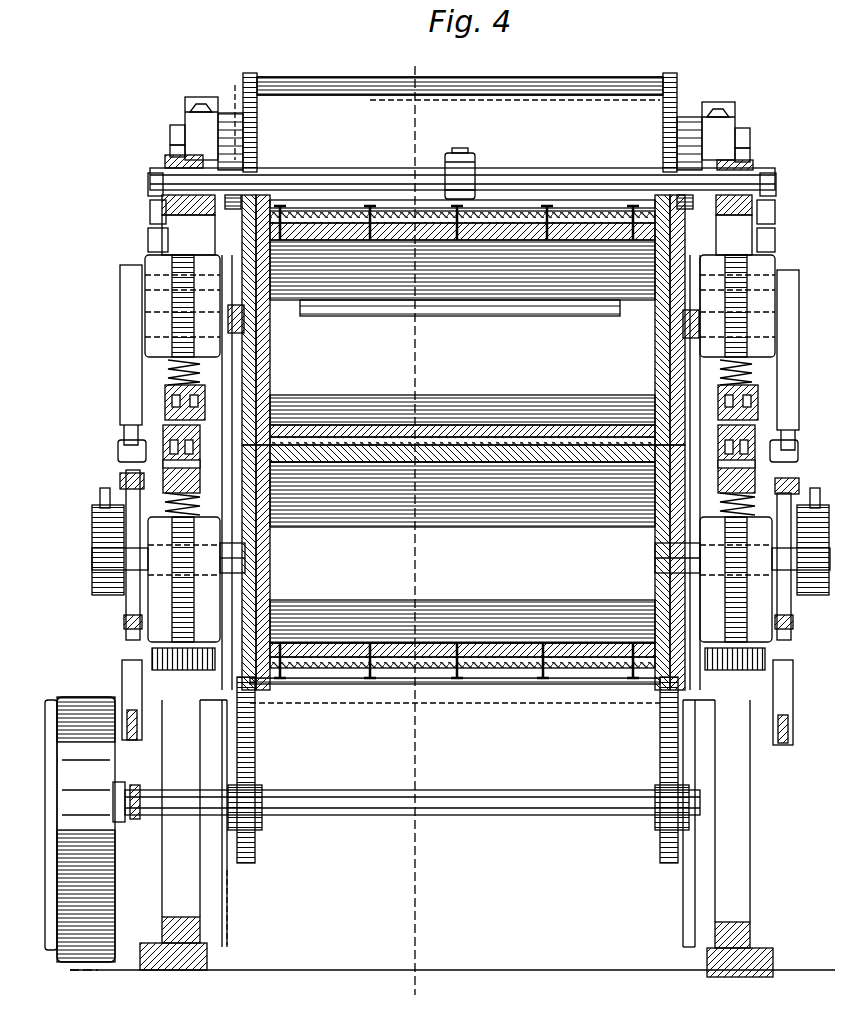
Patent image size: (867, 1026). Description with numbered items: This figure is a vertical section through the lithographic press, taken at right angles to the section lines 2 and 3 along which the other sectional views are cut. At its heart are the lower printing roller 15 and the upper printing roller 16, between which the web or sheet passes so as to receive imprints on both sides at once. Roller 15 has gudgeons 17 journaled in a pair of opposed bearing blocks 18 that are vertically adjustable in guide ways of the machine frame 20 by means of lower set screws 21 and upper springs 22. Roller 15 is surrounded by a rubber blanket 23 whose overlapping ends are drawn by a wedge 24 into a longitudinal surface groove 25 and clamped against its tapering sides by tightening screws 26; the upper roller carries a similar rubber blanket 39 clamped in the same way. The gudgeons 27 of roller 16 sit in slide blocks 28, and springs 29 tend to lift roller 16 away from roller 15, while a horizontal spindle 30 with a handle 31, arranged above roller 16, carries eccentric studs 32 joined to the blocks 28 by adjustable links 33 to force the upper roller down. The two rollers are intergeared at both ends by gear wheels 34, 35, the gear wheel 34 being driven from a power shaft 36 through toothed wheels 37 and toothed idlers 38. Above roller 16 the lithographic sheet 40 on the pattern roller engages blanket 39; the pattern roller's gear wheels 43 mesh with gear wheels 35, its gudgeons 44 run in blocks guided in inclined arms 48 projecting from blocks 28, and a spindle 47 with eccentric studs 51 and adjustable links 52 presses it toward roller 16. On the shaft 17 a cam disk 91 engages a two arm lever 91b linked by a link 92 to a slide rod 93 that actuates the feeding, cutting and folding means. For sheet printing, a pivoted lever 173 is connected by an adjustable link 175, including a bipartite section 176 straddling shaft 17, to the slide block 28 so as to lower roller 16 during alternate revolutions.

The section line 2— 2 is at (232, 504).
The section line 3— 3 is at (415, 531).
The lower printing roller 15 is at (462, 552).
The upper printing roller 16 is at (462, 332).
The gudgeons 17 is at (95, 575).
The bearing blocks 18 is at (460, 579).
The machine frame 20 is at (805, 166).
The lower set screws 21 is at (152, 662).
The upper springs 22 is at (195, 505).
The rubber blanket 23 is at (455, 475).
The wedge 24 is at (583, 204).
The longitudinal surface groove 25 is at (485, 220).
The tightening screws 26 is at (548, 215).
The gudgeons 27 is at (140, 322).
The slide blocks 28 is at (460, 306).
The springs 29 is at (168, 378).
The horizontal spindle 30 is at (340, 168).
The handle 31 is at (466, 155).
The eccentric studs 32 is at (147, 184).
The adjustable links 33 is at (150, 223).
The gear wheels 34 is at (262, 620).
The gear wheels 35 is at (262, 388).
The power shaft 36 is at (553, 800).
The toothed wheels 37 is at (258, 778).
The toothed idlers 38 is at (255, 728).
The rubber blanket 39 is at (520, 215).
The lithographic sheet 40 is at (460, 99).
The gear wheels 43 is at (252, 74).
The gudgeons 44 is at (245, 190).
The spindle 47 is at (236, 122).
The inclined arms 48 is at (196, 145).
The eccentric studs 51 is at (172, 130).
The adjustable links 52 is at (752, 153).
The cam disk 91 is at (92, 538).
The two arm lever 91b is at (120, 480).
The link 92 is at (130, 447).
The slide rod 93 is at (195, 458).
The lever 173 is at (132, 742).
The adjustable link 175 is at (120, 308).
The bipartite section 176 is at (128, 612).